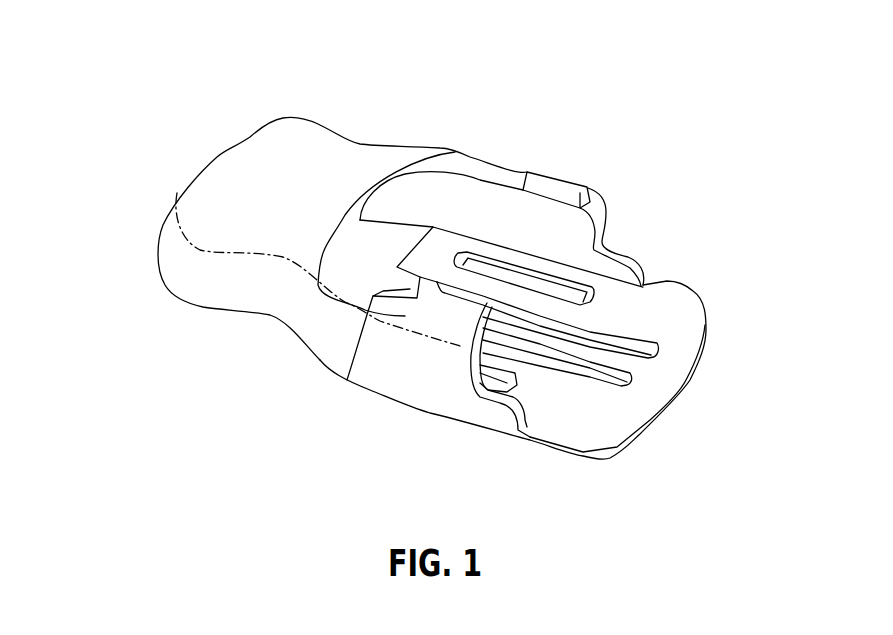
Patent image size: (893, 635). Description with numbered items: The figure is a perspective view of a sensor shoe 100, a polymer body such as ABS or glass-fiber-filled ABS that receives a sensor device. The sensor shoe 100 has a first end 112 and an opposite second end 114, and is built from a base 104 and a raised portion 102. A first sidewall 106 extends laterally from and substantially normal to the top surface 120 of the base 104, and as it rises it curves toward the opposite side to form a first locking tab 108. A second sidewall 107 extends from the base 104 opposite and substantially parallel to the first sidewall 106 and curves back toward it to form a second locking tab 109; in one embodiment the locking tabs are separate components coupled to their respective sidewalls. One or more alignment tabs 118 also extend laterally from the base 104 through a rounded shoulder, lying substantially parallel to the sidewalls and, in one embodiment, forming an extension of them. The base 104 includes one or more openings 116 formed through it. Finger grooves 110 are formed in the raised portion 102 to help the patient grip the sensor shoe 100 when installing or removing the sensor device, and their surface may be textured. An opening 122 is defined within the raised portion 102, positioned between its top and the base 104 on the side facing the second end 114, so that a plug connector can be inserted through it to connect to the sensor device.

The sensor shoe 100 is at (197, 62).
The raised portion 102 is at (207, 192).
The base 104 is at (533, 437).
The first sidewall 106 is at (433, 357).
The second sidewall 107 is at (607, 233).
The first locking tab 108 is at (347, 377).
The second locking tab 109 is at (566, 180).
The finger grooves 110 is at (268, 322).
The first end 112 is at (148, 217).
The second end 114 is at (694, 380).
The openings 116 is at (520, 390).
The alignment tabs 118 is at (480, 403).
The top surface 120 is at (677, 313).
The opening 122 is at (399, 204).